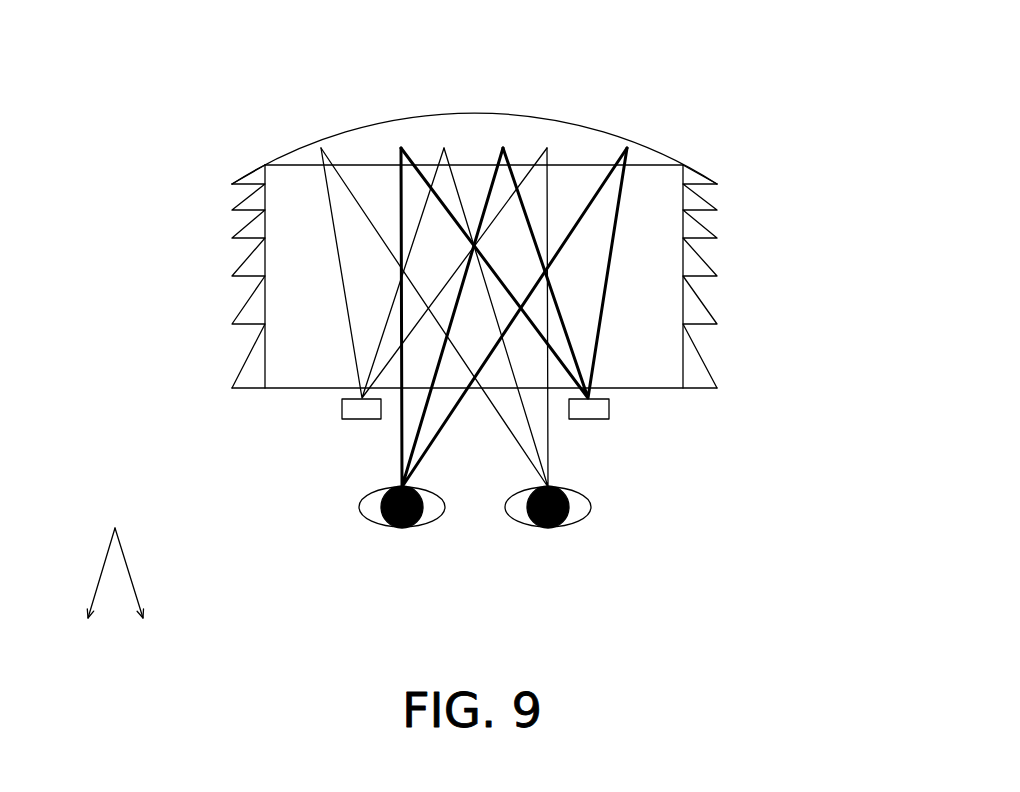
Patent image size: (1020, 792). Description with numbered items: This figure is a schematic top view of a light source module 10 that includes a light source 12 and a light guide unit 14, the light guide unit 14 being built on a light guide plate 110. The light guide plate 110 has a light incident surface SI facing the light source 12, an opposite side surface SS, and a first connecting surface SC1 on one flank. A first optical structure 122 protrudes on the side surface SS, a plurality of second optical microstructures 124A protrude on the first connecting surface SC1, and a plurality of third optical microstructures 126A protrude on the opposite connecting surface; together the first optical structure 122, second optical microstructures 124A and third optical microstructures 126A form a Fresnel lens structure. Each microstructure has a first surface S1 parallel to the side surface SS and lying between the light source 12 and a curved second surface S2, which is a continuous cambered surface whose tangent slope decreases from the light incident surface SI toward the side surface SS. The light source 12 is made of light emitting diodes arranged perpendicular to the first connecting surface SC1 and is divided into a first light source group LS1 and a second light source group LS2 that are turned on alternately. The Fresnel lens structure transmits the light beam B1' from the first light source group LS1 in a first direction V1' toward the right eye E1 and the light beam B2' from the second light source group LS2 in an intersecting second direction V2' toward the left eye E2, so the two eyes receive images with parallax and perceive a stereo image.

The light guide unit 14 is at (735, 87).
The first optical structure 122 is at (545, 148).
The second optical microstructures 124A is at (250, 306).
The third optical microstructures 126A is at (700, 309).
The light guide plate 110 is at (642, 373).
The light source 12 is at (817, 127).
The light source module 10 is at (830, 553).
The side surface SS is at (371, 163).
The first connecting surface SC1 is at (257, 182).
The first surface S1 is at (236, 191).
The second surface S2 is at (241, 179).
The light incident surface SI is at (284, 390).
The first light source group LS1 is at (353, 421).
The second light source group LS2 is at (600, 421).
The right eye E1 is at (548, 527).
The left eye E2 is at (402, 529).
The light beam B1' is at (313, 281).
The light beam B2' is at (636, 288).
The first direction V1' is at (144, 594).
The second direction V2' is at (91, 594).